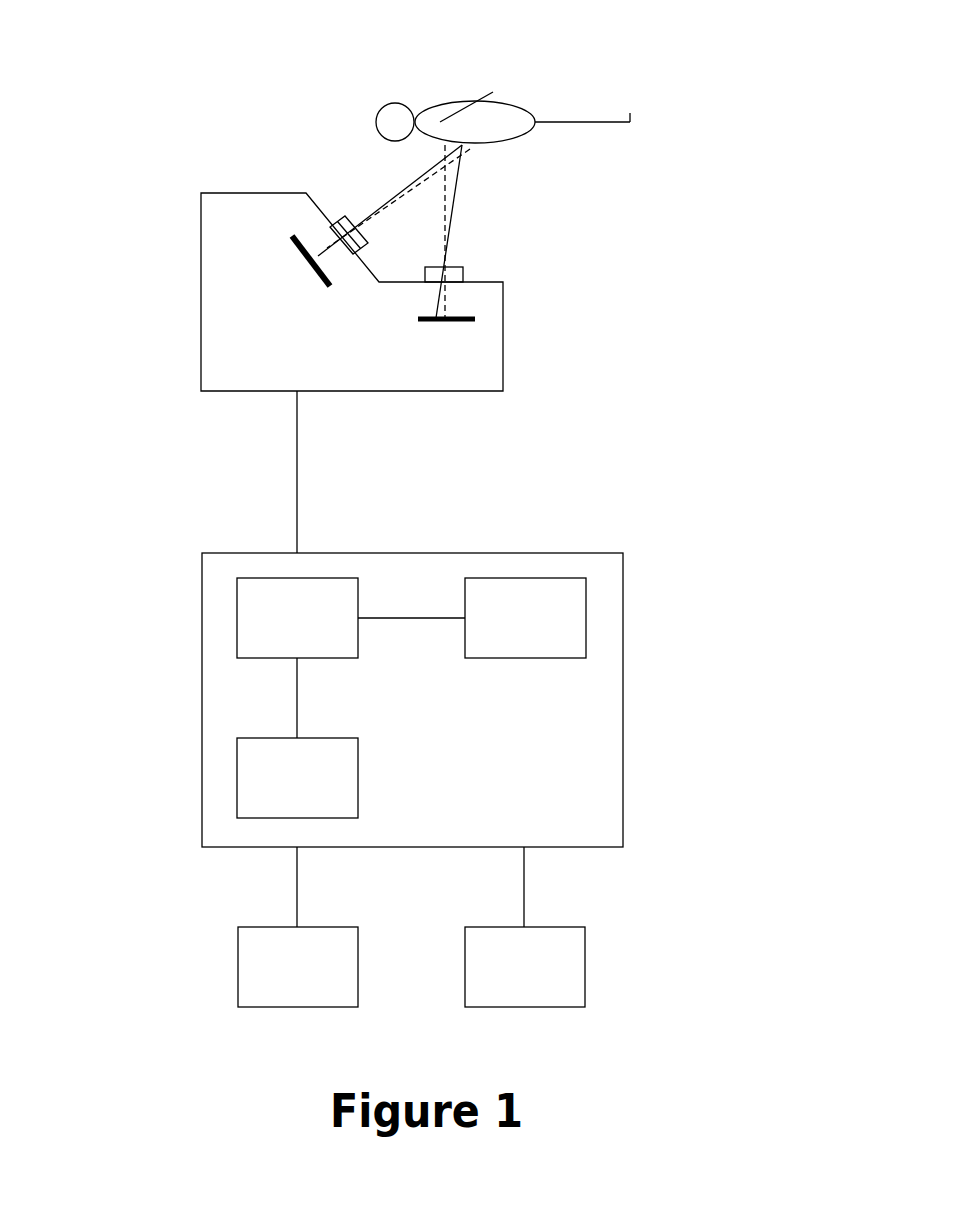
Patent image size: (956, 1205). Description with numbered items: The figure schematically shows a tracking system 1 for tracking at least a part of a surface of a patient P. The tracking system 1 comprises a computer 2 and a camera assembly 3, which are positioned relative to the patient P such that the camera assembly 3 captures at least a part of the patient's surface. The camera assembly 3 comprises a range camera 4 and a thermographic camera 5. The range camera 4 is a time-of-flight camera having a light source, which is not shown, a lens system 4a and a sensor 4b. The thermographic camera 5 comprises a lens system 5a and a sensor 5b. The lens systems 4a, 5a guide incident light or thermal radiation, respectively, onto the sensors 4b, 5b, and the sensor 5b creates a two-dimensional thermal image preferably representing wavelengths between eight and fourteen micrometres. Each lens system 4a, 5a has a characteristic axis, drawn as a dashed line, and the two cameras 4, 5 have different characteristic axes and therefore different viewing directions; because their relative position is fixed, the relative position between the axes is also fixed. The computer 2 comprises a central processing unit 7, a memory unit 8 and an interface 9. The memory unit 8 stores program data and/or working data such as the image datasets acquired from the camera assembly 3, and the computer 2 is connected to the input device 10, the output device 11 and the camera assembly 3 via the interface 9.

The tracking system 1 is at (735, 442).
The computer 2 is at (202, 618).
The camera assembly 3 is at (178, 360).
The range camera 4 is at (216, 197).
The lens system 4a is at (342, 217).
The sensor 4b is at (312, 252).
The thermographic camera 5 is at (503, 278).
The lens system 5a is at (463, 269).
The sensor 5b is at (458, 321).
The central processing unit 7 is at (308, 632).
The memory unit 8 is at (536, 632).
The interface 9 is at (308, 792).
The input device 10 is at (277, 982).
The output device 11 is at (504, 982).
The patient P is at (502, 100).